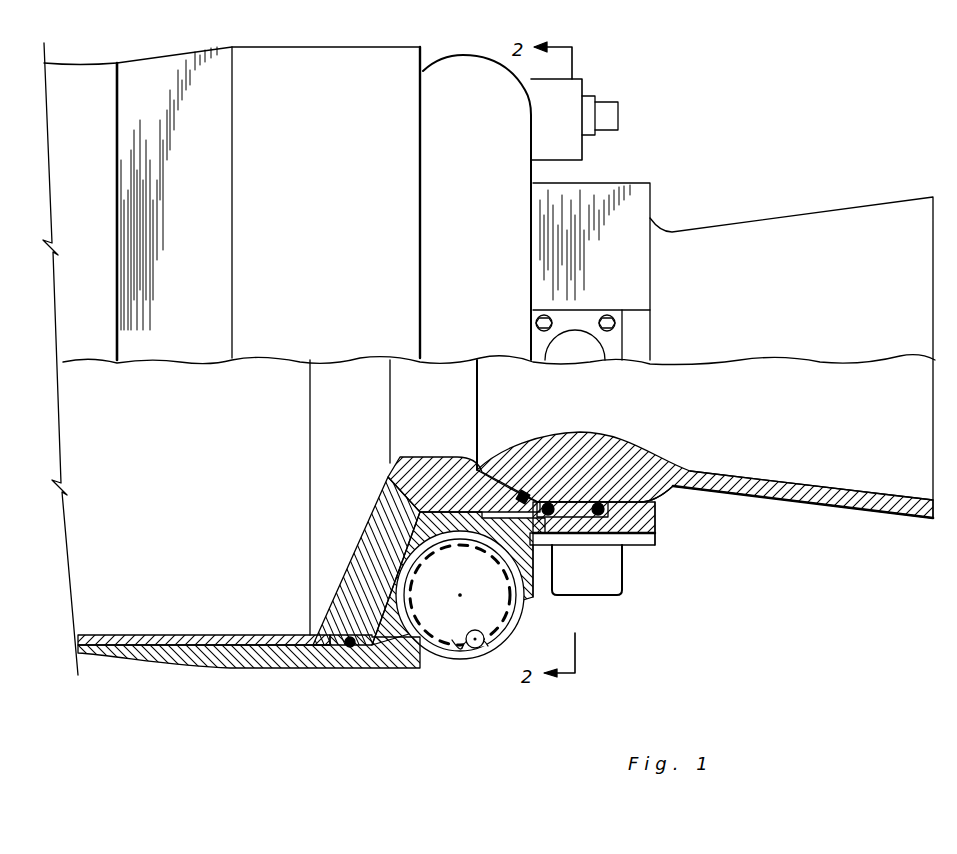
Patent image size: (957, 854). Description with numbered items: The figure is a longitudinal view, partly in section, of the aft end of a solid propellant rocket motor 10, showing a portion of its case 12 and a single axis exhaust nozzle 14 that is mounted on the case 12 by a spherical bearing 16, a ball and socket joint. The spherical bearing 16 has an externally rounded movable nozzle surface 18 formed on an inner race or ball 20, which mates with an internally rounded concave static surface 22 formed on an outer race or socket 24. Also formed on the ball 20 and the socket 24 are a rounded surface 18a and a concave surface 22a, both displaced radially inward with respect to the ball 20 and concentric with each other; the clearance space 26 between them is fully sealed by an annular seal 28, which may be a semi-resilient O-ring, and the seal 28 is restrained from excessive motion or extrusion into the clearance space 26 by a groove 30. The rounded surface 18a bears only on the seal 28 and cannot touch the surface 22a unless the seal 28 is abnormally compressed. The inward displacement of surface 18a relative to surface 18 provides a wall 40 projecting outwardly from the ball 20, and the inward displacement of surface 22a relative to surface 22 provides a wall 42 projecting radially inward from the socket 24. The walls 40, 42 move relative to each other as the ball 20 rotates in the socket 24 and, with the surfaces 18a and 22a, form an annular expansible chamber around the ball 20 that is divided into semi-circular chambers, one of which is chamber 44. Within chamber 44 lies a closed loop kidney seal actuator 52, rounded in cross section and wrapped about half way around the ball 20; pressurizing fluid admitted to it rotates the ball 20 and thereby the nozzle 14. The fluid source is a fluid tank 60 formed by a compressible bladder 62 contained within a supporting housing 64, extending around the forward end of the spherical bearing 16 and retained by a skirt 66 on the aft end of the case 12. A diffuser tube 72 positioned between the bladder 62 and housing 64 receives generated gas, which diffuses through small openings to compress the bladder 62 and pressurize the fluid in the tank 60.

The rocket motor 10 is at (185, 50).
The case 12 is at (370, 80).
The exhaust nozzle 14 is at (853, 500).
The spherical bearing 16 is at (678, 517).
The movable nozzle surface 18 is at (660, 490).
The rounded surface 18a is at (568, 510).
The ball 20 is at (590, 455).
The static surface 22 is at (630, 533).
The concave surface 22a is at (546, 503).
The socket 24 is at (648, 528).
The clearance space 26 is at (500, 490).
The annular seal 28 is at (522, 492).
The groove 30 is at (505, 497).
The wall 40 is at (643, 500).
The wall 42 is at (530, 512).
The chamber 44 is at (583, 510).
The kidney seal actuator 52 is at (547, 515).
The fluid tank 60 is at (430, 589).
The bladder 62 is at (438, 658).
The housing 64 is at (483, 657).
The skirt 66 is at (410, 652).
The diffuser tube 72 is at (463, 657).